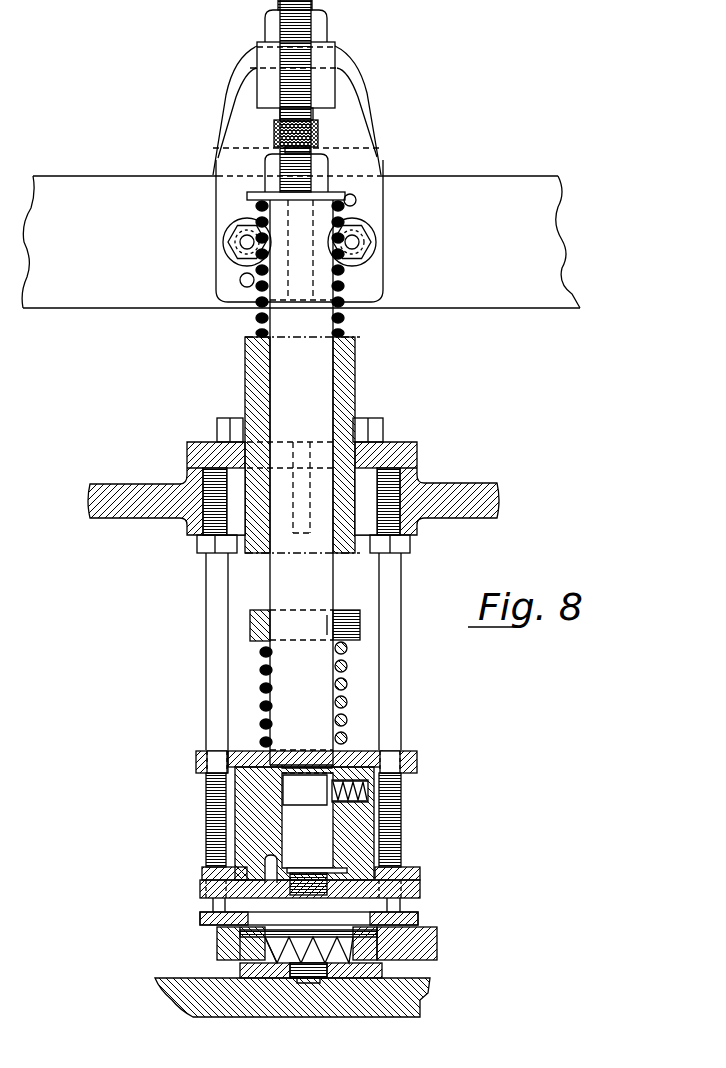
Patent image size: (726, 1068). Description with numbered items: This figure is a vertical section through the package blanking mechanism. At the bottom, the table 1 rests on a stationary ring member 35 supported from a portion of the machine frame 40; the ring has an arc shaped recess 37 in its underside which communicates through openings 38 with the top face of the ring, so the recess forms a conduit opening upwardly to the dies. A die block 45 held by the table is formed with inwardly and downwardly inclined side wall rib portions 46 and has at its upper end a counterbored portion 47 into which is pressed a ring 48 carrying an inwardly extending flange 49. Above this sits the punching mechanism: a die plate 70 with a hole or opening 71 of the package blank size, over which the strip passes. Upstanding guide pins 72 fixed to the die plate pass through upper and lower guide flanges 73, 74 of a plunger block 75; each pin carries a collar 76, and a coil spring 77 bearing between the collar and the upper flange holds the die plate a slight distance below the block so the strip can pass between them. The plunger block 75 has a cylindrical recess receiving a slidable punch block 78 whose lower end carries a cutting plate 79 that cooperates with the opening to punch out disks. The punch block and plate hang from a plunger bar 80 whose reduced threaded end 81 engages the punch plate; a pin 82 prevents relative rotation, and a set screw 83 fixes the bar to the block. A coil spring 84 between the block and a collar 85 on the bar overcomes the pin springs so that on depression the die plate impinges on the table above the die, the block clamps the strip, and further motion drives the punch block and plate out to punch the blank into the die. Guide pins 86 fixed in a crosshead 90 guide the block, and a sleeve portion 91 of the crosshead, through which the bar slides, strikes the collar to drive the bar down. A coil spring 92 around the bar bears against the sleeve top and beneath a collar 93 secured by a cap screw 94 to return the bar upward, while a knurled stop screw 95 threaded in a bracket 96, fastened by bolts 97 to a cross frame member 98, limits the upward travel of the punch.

The table 1 is at (438, 958).
The ring member 35 is at (410, 966).
The arc shaped recess 37 is at (312, 979).
The openings 38 is at (300, 980).
The machine frame 40 is at (210, 1006).
The die block 45 is at (438, 940).
The side wall rib portions 46 is at (240, 968).
The counterbored portion 47 is at (228, 946).
The ring 48 is at (410, 918).
The inwardly extending flange 49 is at (240, 963).
The die plate 70 is at (245, 931).
The hole or opening 71 is at (420, 906).
The guide pins 72 is at (240, 915).
The upper guide flange 73 is at (416, 765).
The lower guide flange 74 is at (205, 890).
The plunger block 75 is at (351, 760).
The collar 76 is at (204, 871).
The coil spring 77 is at (208, 800).
The punch block 78 is at (256, 766).
The cutting plate 79 is at (212, 912).
The plunger bar 80 is at (301, 667).
The reduced threaded end 81 is at (304, 870).
The pin 82 is at (277, 860).
The set screw 83 is at (384, 758).
The coil spring 84 is at (346, 697).
The collar 85 is at (346, 610).
The guide pins 86 is at (216, 631).
The crosshead 90 is at (448, 492).
The sleeve portion 91 is at (346, 402).
The coil spring 92 is at (340, 338).
The collar 93 is at (354, 196).
The cap screw 94 is at (331, 166).
The stop screw 95 is at (320, 130).
The bracket 96 is at (356, 70).
The bolts 97 is at (230, 252).
The cross frame member 98 is at (301, 242).